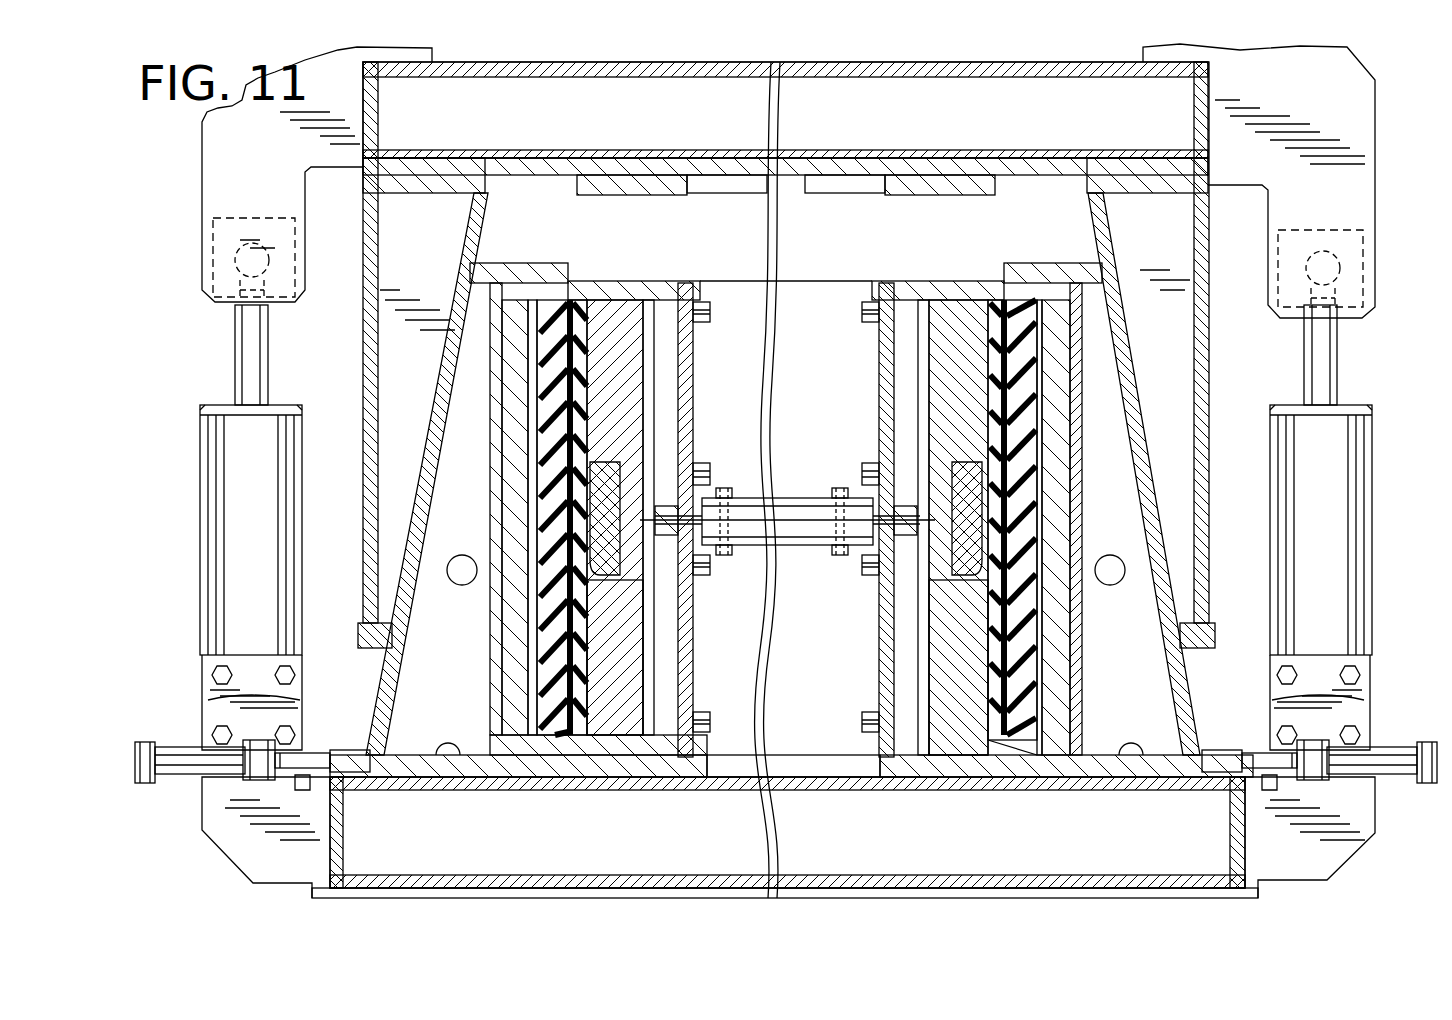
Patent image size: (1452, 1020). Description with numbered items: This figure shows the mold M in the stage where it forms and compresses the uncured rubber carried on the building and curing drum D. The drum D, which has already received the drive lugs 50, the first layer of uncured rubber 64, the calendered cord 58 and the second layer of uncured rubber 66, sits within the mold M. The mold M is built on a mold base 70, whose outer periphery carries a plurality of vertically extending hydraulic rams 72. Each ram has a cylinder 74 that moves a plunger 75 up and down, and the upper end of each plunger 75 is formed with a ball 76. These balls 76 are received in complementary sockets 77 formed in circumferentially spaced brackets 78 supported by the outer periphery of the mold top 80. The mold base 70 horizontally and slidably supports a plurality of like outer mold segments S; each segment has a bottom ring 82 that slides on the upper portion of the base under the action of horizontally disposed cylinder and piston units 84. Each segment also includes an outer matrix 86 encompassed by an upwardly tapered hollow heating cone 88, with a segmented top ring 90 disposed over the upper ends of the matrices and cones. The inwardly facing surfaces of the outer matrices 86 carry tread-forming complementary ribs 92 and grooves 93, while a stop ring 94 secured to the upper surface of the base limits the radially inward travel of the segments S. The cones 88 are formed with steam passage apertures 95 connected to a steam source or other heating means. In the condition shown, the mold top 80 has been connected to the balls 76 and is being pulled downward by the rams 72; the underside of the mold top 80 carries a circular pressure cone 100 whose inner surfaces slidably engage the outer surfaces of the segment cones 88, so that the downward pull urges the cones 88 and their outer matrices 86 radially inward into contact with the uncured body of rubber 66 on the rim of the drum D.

The drive lugs 50 is at (608, 468).
The calendered cord 58 is at (580, 670).
The first layer of uncured rubber 64 is at (580, 592).
The second layer of uncured rubber 66 is at (570, 312).
The mold base 70 is at (785, 837).
The hydraulic rams 72 is at (214, 511).
The cylinder 74 is at (786, 685).
The plunger 75 is at (238, 371).
The ball 76 is at (213, 258).
The socket 77 is at (252, 243).
The brackets 78 is at (212, 126).
The mold top 80 is at (785, 118).
The bottom ring 82 is at (444, 770).
The cylinder and piston units 84 is at (180, 772).
The outer matrix 86 is at (535, 518).
The heating cone 88 is at (428, 640).
The segmented top ring 90 is at (528, 266).
The ribs 92 is at (520, 382).
The grooves 93 is at (527, 640).
The stop ring 94 is at (626, 765).
The steam passage apertures 95 is at (462, 585).
The pressure cone 100 is at (785, 194).
The mold M is at (363, 341).
The building and curing drum D is at (695, 392).
The outer mold segments S is at (775, 708).